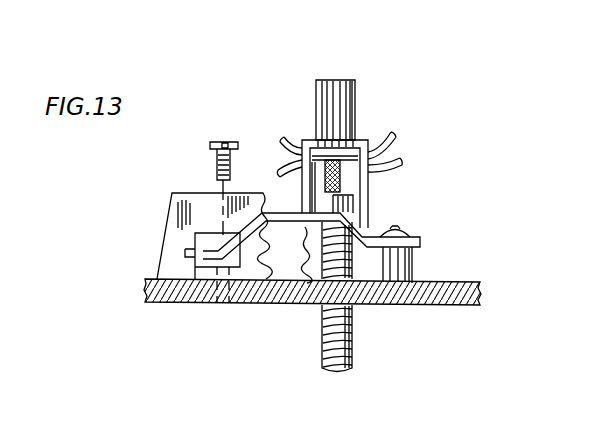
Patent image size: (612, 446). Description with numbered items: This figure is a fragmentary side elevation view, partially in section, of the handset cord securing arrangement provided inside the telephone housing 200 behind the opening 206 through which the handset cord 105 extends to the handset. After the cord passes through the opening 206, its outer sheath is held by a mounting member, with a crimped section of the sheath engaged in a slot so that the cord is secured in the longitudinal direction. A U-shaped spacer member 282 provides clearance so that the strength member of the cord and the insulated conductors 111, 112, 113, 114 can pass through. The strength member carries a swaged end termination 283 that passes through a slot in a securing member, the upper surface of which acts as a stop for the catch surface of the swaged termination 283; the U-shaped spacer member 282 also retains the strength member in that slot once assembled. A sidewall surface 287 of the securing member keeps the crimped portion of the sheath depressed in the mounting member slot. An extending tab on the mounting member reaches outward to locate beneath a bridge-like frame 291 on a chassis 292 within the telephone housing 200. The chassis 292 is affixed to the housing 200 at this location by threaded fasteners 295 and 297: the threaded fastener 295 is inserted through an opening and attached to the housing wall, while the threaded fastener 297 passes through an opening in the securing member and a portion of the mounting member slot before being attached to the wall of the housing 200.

The handset cord 105 is at (354, 360).
The insulated conductor 111 is at (282, 158).
The insulated conductor 112 is at (302, 130).
The insulated conductor 113 is at (386, 139).
The insulated conductor 114 is at (394, 165).
The telephone housing 200 is at (455, 283).
The opening 206 is at (359, 315).
The U-shaped spacer member 282 is at (304, 208).
The swaged end termination 283 is at (357, 94).
The sidewall surface 287 is at (371, 207).
The bridge-like frame 291 is at (189, 243).
The chassis 292 is at (170, 212).
The threaded fastener 295 is at (219, 144).
The threaded fastener 297 is at (410, 238).